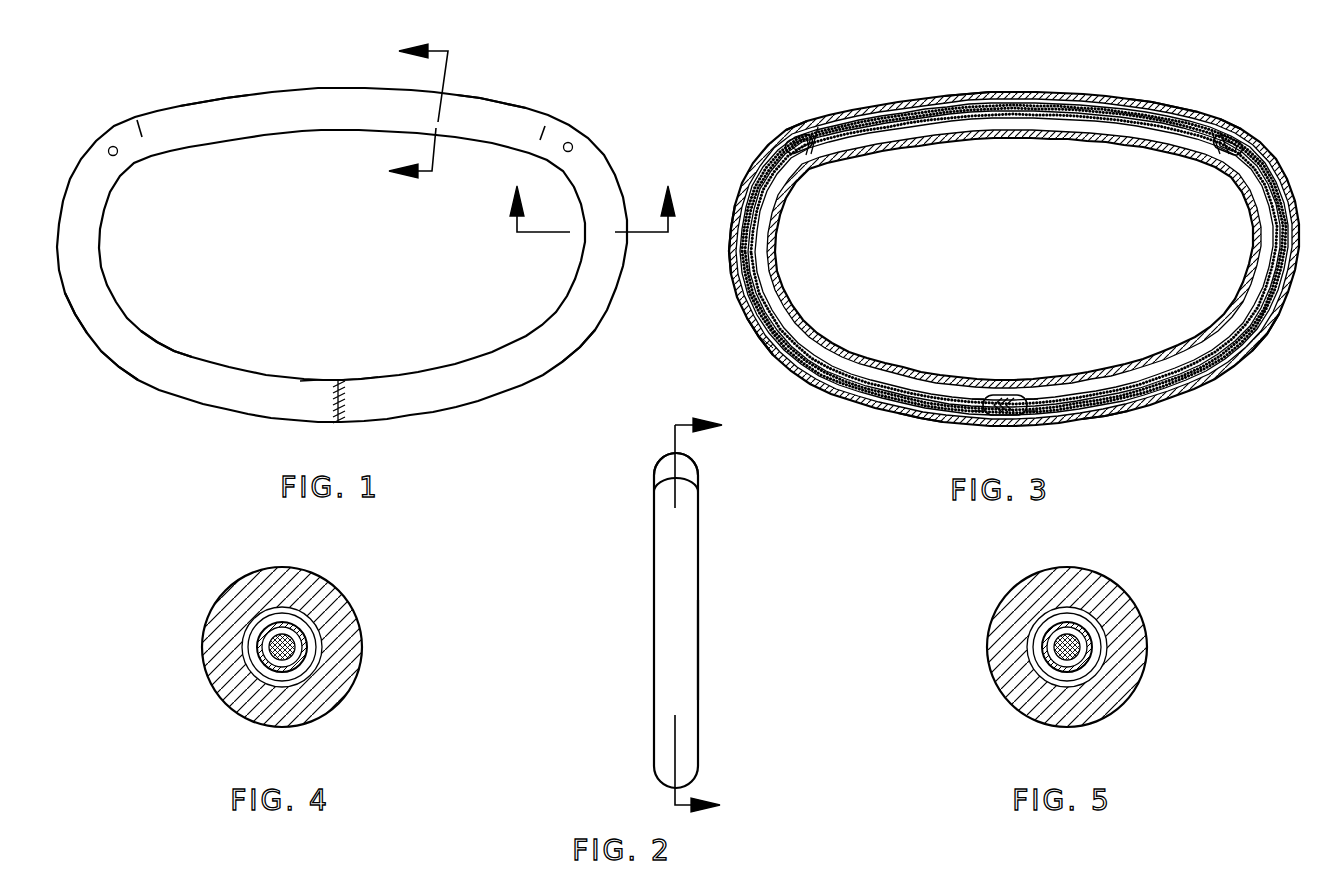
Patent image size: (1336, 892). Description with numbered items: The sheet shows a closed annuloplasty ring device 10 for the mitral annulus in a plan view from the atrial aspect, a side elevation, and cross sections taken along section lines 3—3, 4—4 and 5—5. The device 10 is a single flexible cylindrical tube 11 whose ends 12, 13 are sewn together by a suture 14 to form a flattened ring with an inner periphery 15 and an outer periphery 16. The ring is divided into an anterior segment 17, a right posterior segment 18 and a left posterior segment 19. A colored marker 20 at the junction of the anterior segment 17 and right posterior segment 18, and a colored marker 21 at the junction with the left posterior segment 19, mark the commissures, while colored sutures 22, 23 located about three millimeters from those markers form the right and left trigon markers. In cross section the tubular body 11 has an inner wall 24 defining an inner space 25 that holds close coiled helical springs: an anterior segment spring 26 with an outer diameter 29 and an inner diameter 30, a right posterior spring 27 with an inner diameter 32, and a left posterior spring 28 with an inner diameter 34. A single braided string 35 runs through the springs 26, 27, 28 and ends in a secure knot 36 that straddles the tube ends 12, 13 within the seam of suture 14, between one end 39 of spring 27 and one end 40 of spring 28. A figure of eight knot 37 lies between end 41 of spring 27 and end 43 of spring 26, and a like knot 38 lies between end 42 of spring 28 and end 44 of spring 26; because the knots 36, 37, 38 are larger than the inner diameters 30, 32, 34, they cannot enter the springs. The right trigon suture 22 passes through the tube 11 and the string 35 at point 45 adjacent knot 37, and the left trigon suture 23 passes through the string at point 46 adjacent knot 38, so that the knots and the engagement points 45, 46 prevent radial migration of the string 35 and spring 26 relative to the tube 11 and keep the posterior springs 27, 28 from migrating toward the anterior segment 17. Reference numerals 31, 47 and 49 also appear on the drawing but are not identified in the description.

In FIG. 1, the device 10 is at (323, 88).
In FIG. 3, the device 10 is at (1014, 224).
In FIG. 1, the flexible cylindrical tube 11 is at (492, 100).
In FIG. 3, the flexible cylindrical tube 11 is at (1164, 86).
In FIG. 2, the flexible cylindrical tube 11 is at (657, 762).
In FIG. 4, the flexible cylindrical tube 11 is at (278, 567).
In FIG. 5, the flexible cylindrical tube 11 is at (1063, 567).
In FIG. 1, the tube end 12 is at (333, 382).
In FIG. 3, the tube end 12 is at (959, 429).
In FIG. 1, the tube end 13 is at (345, 382).
In FIG. 3, the tube end 13 is at (1057, 429).
In FIG. 1, the suture 14 is at (332, 398).
In FIG. 1, the inner periphery 15 is at (163, 340).
In FIG. 1, the outer periphery 16 is at (120, 364).
In FIG. 1, the anterior segment 17 is at (232, 99).
In FIG. 3, the anterior segment 17 is at (979, 59).
In FIG. 2, the anterior segment 17 is at (660, 460).
In FIG. 1, the right posterior segment 18 is at (585, 338).
In FIG. 3, the right posterior segment 18 is at (1279, 329).
In FIG. 2, the right posterior segment 18 is at (690, 655).
In FIG. 1, the left posterior segment 19 is at (80, 322).
In FIG. 3, the left posterior segment 19 is at (705, 240).
In FIG. 1, the colored marker 20 is at (573, 143).
In FIG. 1, the colored marker 21 is at (109, 147).
In FIG. 1, the colored suture 22 is at (548, 116).
In FIG. 3, the colored suture 22 is at (1251, 89).
In FIG. 2, the colored suture 22 is at (699, 488).
In FIG. 1, the colored suture 23 is at (137, 118).
In FIG. 3, the colored suture 23 is at (769, 86).
In FIG. 3, the inner wall 24 is at (1014, 245).
In FIG. 4, the inner wall 24 is at (260, 605).
In FIG. 5, the inner wall 24 is at (1045, 605).
In FIG. 3, the inner space 25 is at (1014, 234).
In FIG. 4, the inner space 25 is at (356, 622).
In FIG. 5, the inner space 25 is at (1143, 622).
In FIG. 3, the close coiled helical spring 26 is at (1014, 218).
In FIG. 4, the close coiled helical spring 26 is at (283, 670).
In FIG. 3, the spring 27 is at (1273, 332).
In FIG. 5, the spring 27 is at (1068, 670).
In FIG. 3, the spring 28 is at (739, 336).
In FIG. 3, the outer diameter 29 is at (1014, 216).
In FIG. 4, the outer diameter 29 is at (247, 628).
In FIG. 3, the inner diameter 30 is at (1014, 227).
In FIG. 4, the inner diameter 30 is at (300, 624).
In FIG. 3, the core wire 31 is at (1014, 272).
In FIG. 5, the core wire 31 is at (1032, 628).
In FIG. 3, the inner diameter 32 is at (1019, 259).
In FIG. 5, the inner diameter 32 is at (1085, 614).
In FIG. 3, the inner diameter 34 is at (750, 359).
In FIG. 3, the string 35 is at (1014, 233).
In FIG. 4, the string 35 is at (272, 648).
In FIG. 5, the string 35 is at (1057, 648).
In FIG. 3, the secure knot 36 is at (1018, 369).
In FIG. 3, the figure of eight knot 37 is at (1256, 126).
In FIG. 3, the figure of eight knot 38 is at (766, 123).
In FIG. 3, the spring end 39 is at (1059, 373).
In FIG. 3, the spring end 40 is at (961, 373).
In FIG. 3, the spring end 41 is at (1256, 139).
In FIG. 3, the spring end 42 is at (766, 135).
In FIG. 3, the spring end 43 is at (1253, 116).
In FIG. 3, the spring end 44 is at (767, 108).
In FIG. 3, the engagement point 45 is at (1192, 161).
In FIG. 3, the engagement point 46 is at (841, 162).
In FIG. 3, the wire end 47 is at (1129, 437).
In FIG. 3, the wire end 49 is at (888, 440).
In FIG. 2, the section line 3— 3 is at (710, 615).
In FIG. 1, the section line 4— 4 is at (403, 110).
In FIG. 1, the section line 5— 5 is at (592, 193).